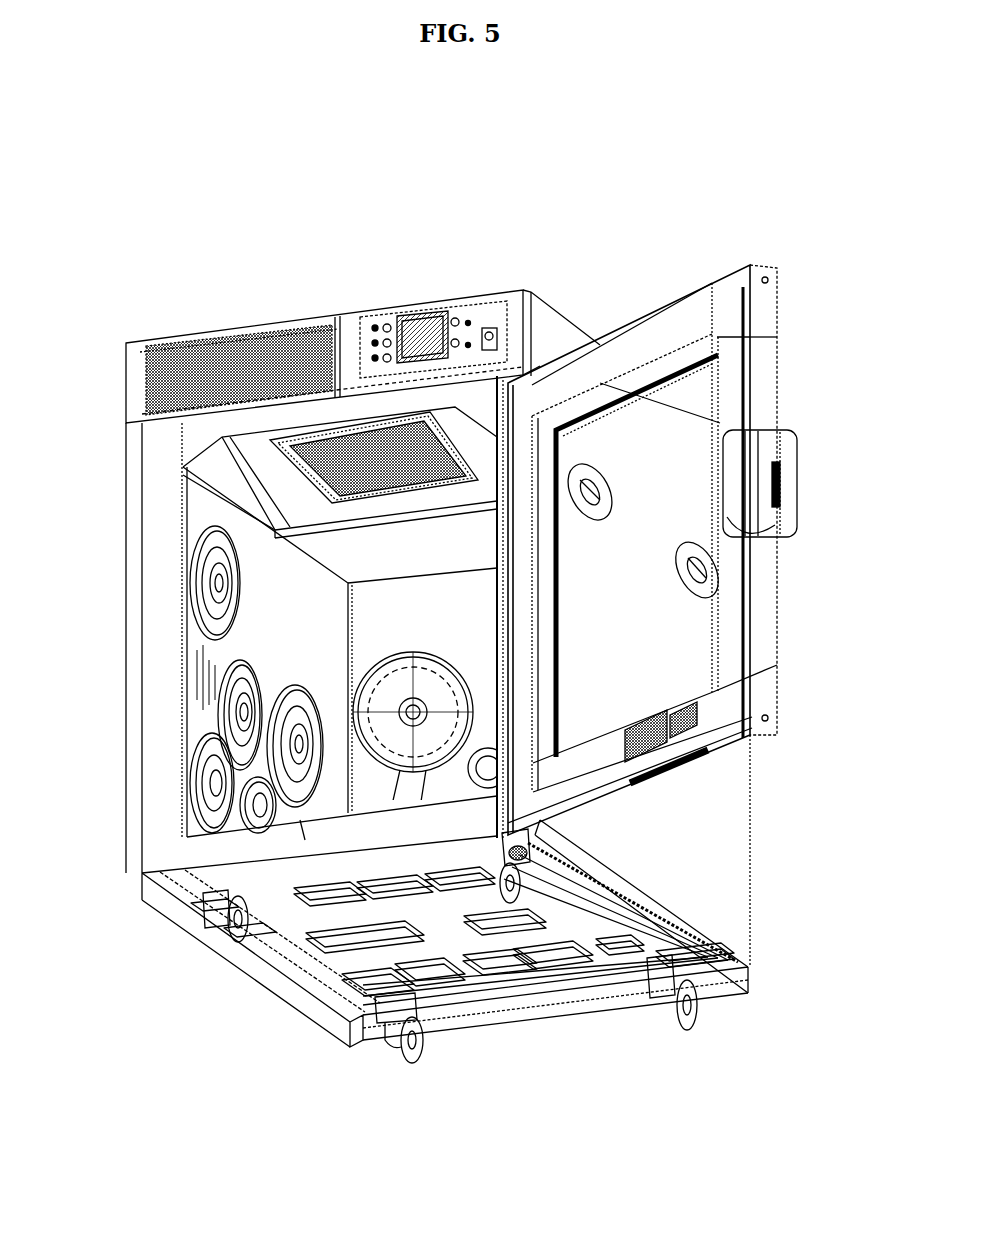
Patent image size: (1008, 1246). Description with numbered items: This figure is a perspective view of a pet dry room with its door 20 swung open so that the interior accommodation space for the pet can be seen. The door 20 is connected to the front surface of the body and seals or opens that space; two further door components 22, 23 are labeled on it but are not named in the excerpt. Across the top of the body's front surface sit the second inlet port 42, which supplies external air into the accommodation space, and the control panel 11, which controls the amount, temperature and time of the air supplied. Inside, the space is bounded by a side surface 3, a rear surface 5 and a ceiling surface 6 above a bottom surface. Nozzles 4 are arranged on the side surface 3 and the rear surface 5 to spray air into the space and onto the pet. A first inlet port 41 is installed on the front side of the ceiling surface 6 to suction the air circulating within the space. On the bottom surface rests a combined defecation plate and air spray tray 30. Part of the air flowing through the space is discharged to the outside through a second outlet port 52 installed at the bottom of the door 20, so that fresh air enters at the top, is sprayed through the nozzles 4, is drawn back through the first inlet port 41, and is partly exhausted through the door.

The side surface 3 is at (313, 645).
The nozzles 4 is at (203, 578).
The rear surface 5 is at (420, 632).
The ceiling surface 6 is at (392, 560).
The control panel 11 is at (454, 322).
The door 20 is at (703, 278).
The door handle 22 is at (773, 452).
The door frame side 23 is at (763, 306).
The combined defecation plate and air spray tray 30 is at (212, 848).
The first inlet port 41 is at (300, 492).
The second inlet port 42 is at (233, 345).
The second outlet port 52 is at (666, 772).